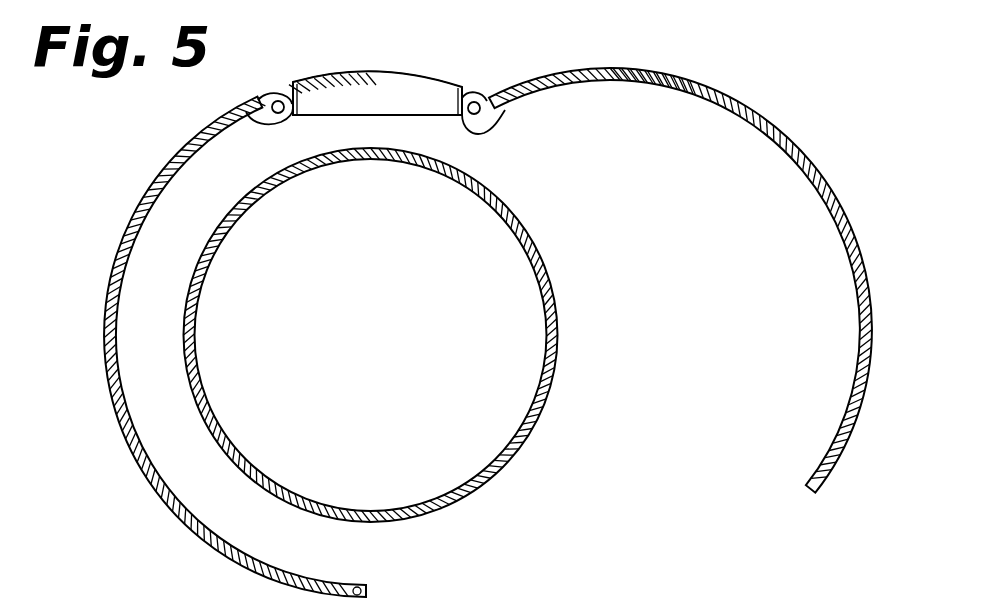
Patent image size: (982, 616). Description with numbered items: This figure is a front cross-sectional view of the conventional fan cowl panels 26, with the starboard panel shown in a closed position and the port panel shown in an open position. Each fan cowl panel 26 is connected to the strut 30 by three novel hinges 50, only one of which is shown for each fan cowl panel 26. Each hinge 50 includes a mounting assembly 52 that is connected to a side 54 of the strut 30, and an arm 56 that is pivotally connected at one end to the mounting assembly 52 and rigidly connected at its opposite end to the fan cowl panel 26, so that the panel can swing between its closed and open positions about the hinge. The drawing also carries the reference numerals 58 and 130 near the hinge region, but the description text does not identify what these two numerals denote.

The fan cowl panel 26 is at (729, 101).
The strut 30 is at (385, 69).
The hinge 50 is at (374, 122).
The mounting assembly 52 is at (274, 94).
The side of the strut 54 is at (294, 80).
The arm 56 is at (276, 121).
The second hook 58 is at (475, 98).
The pad top surface 130 is at (331, 75).